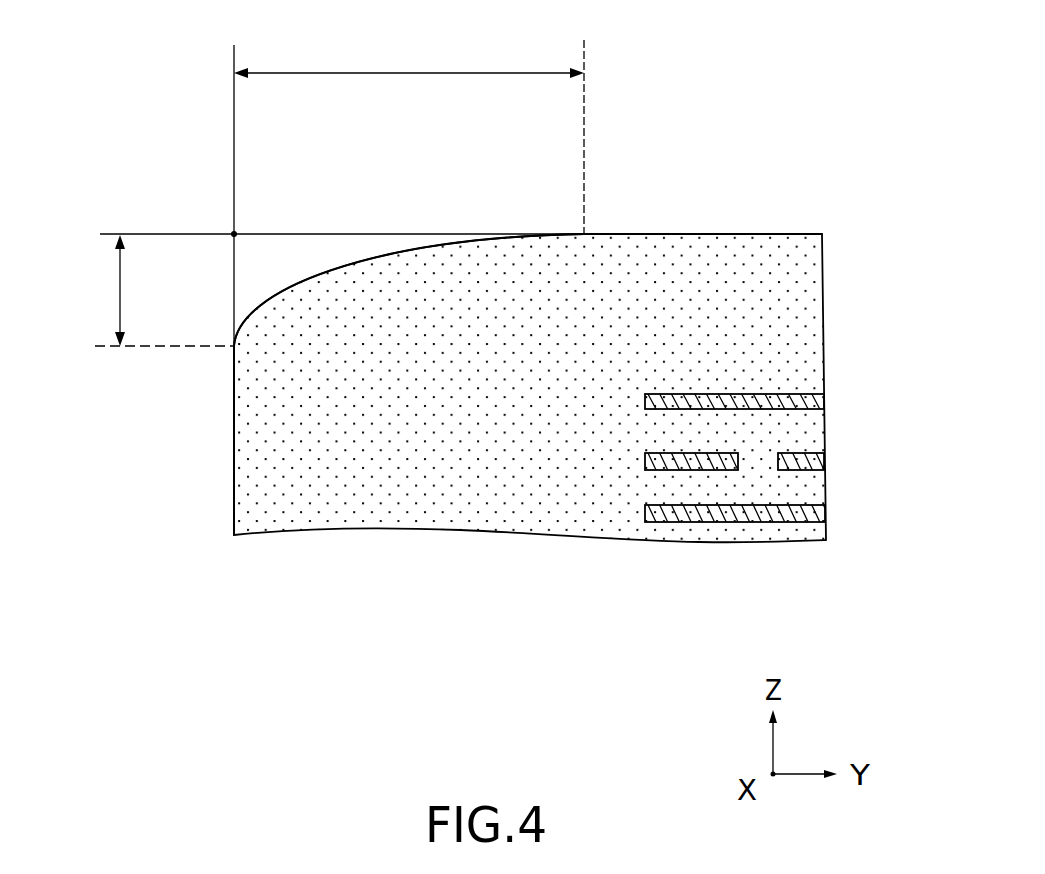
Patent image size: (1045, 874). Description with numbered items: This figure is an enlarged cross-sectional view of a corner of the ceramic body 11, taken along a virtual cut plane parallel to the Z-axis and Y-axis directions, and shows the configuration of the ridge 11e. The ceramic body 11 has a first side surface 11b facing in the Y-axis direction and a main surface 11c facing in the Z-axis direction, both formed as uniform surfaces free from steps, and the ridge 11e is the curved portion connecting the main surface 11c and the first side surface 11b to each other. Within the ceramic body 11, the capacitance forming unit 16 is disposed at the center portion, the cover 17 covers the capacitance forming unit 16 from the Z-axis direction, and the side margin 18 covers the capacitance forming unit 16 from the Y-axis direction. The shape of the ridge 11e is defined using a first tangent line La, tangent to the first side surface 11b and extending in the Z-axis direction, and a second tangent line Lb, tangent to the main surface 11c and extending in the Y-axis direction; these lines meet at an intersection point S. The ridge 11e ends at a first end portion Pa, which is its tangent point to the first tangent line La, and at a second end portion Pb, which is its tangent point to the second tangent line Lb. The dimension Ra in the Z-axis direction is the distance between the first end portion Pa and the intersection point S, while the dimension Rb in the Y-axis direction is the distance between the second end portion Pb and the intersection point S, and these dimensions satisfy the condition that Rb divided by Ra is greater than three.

The ceramic body 11 is at (782, 163).
The first side surface 11b is at (235, 465).
The main surface 11c is at (703, 233).
The ridge 11e is at (363, 252).
The capacitance forming unit 16 is at (778, 477).
The cover 17 is at (779, 324).
The side margin 18 is at (448, 485).
The first tangent line La is at (234, 102).
The second tangent line Lb is at (177, 232).
The intersection point S is at (235, 231).
The first end portion Pa is at (233, 347).
The second end portion Pb is at (585, 232).
The dimension Ra is at (156, 290).
The dimension Rb is at (409, 52).